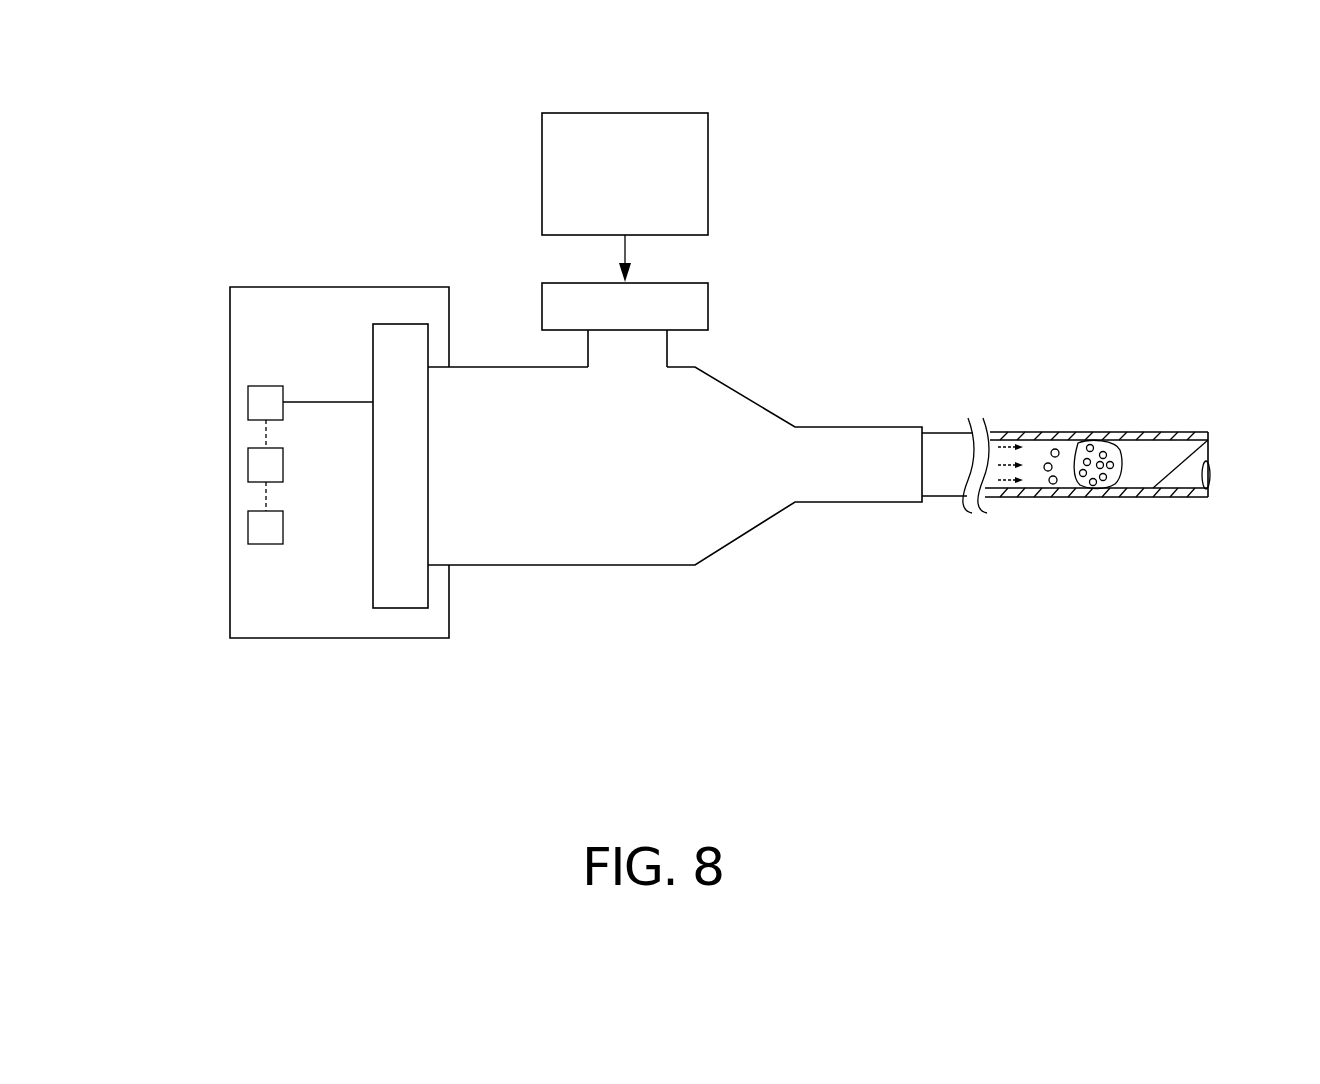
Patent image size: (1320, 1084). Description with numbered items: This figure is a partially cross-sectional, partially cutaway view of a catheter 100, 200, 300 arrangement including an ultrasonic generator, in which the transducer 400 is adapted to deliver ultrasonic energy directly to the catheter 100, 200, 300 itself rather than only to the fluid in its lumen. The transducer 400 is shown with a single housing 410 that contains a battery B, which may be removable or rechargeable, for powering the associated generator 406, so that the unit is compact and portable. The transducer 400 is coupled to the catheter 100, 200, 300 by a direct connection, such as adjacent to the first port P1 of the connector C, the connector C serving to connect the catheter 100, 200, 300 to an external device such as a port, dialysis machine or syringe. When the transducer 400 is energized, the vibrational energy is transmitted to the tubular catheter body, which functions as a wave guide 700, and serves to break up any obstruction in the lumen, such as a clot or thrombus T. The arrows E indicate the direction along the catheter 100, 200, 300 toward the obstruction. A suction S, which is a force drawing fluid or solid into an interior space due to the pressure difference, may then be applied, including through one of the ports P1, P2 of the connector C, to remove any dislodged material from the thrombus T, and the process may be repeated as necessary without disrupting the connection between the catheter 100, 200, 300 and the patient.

The housing 410 is at (313, 293).
The first port P1 is at (365, 680).
The ultrasound transducer 400 is at (252, 385).
The generator 406 is at (252, 447).
The battery B is at (252, 510).
The suction S is at (636, 196).
The second port P2 is at (733, 267).
The connector C is at (558, 553).
The catheter 100 is at (1101, 451).
The catheter 200 is at (1101, 451).
The catheter 300 is at (1101, 451).
The wave guide 700 is at (1040, 493).
The fluid flow E is at (1010, 440).
The thrombus T is at (1097, 487).